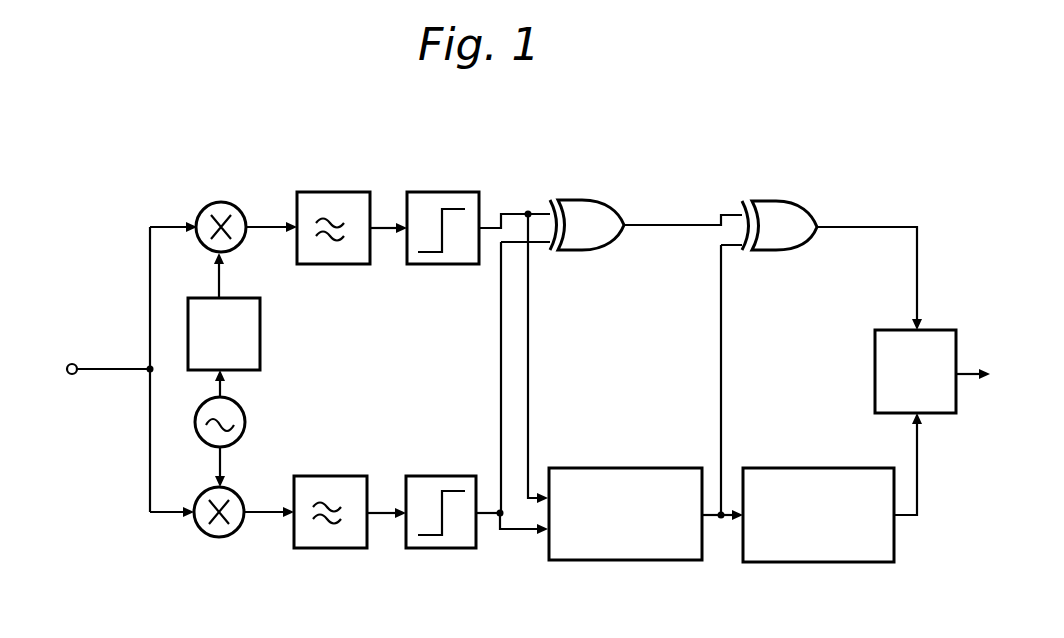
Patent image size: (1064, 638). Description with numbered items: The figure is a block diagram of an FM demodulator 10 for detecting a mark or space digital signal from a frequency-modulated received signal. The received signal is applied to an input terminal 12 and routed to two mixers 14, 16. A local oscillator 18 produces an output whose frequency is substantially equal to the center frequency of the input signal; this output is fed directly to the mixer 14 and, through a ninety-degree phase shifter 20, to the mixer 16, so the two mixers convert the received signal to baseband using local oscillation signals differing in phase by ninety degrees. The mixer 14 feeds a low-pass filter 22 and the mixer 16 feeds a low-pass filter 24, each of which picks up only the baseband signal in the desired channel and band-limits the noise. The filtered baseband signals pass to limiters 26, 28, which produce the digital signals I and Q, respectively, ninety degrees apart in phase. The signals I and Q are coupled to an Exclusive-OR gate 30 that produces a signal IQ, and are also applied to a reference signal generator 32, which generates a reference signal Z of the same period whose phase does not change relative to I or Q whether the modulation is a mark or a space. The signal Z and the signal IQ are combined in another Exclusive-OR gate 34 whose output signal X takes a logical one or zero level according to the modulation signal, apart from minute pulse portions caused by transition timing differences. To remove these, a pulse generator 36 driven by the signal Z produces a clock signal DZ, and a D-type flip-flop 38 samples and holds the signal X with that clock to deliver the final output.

The FM demodulator 10 is at (150, 198).
The input terminal 12 is at (73, 370).
The mixer 14 is at (219, 537).
The mixer 16 is at (221, 201).
The local oscillator 18 is at (245, 420).
The 90° phase shifter 20 is at (262, 327).
The low-pass filter 22 is at (335, 476).
The low-pass filter 24 is at (335, 192).
The limiter 26 is at (440, 476).
The limiter 28 is at (440, 192).
The Exclusive-OR gate 30 is at (598, 200).
The reference signal generator 32 is at (630, 468).
The Exclusive-OR gate 34 is at (776, 201).
The pulse generator 36 is at (812, 468).
The D-type flip-flop 38 is at (936, 330).